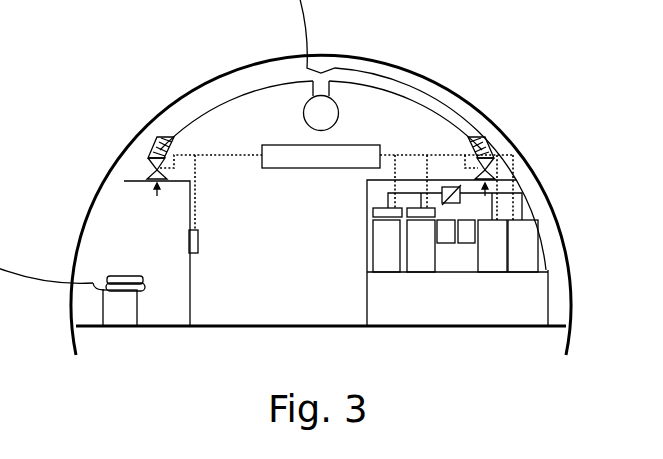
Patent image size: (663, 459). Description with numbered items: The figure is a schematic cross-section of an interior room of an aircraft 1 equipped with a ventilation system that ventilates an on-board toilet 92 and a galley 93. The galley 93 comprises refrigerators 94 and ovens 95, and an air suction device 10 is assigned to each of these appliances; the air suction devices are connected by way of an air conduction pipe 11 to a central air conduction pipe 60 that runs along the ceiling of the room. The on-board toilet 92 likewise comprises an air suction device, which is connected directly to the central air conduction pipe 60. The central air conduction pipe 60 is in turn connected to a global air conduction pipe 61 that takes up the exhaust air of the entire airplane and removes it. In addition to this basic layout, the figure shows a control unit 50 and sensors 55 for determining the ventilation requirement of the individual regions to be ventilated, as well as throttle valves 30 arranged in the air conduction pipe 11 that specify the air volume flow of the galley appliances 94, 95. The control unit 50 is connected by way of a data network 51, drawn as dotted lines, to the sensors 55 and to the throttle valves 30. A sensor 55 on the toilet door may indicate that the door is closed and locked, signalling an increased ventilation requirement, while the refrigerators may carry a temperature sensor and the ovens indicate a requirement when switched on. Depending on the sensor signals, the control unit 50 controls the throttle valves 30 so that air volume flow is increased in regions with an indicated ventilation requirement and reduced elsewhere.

The aircraft cabin 1 is at (138, 118).
The air suction device 10 is at (417, 214).
The air conduction pipe 11 is at (505, 193).
The throttle valve 30 is at (148, 167).
The control unit 50 is at (302, 145).
The data network 51 is at (212, 155).
The sensor 55 is at (198, 239).
The central air conduction pipe 60 is at (442, 99).
The global air conduction pipe 61 is at (325, 113).
The on-board toilet 92 is at (153, 267).
The galley 93 is at (533, 298).
The refrigerator 94 is at (427, 265).
The oven 95 is at (532, 238).